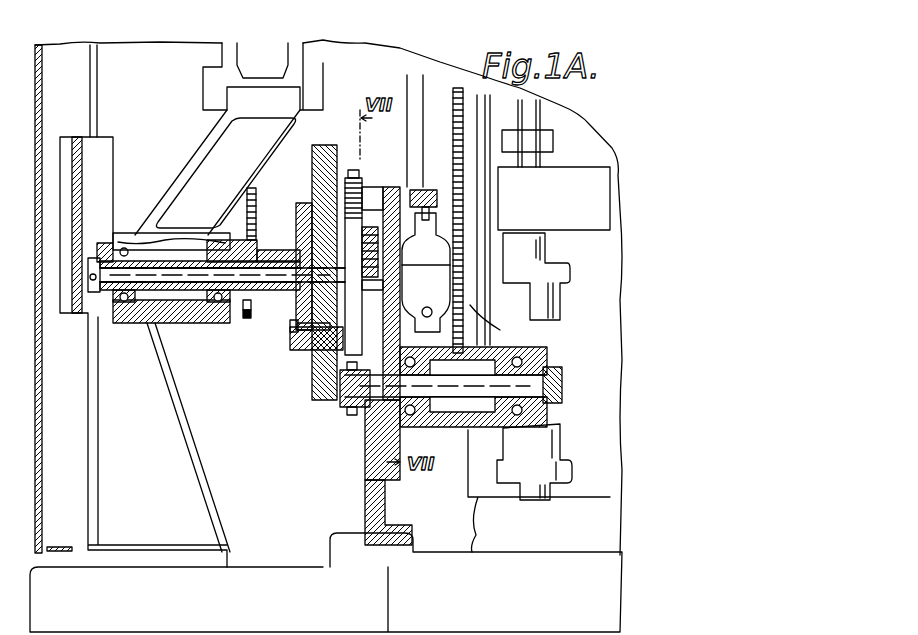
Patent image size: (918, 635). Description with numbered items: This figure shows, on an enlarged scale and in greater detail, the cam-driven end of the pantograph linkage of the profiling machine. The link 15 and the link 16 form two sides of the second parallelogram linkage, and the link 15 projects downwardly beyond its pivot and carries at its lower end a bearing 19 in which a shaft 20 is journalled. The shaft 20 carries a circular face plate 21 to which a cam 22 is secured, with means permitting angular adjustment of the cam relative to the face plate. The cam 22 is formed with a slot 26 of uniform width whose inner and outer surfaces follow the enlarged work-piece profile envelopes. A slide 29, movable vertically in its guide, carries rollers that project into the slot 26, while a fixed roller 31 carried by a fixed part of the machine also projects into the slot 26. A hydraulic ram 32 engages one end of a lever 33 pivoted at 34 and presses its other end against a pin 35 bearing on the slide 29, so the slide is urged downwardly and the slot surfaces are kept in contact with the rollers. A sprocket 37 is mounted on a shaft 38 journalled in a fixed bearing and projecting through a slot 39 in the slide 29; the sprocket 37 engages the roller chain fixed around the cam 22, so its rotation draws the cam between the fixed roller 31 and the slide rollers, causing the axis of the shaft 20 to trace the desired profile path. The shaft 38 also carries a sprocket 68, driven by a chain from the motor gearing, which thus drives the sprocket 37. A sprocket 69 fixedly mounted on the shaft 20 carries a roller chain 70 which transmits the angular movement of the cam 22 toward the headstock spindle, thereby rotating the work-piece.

The link 15 is at (203, 175).
The link 16 is at (212, 98).
The bearing 19 is at (182, 325).
The shaft 20 is at (157, 285).
The circular face plate 21 is at (322, 145).
The cam 22 is at (355, 180).
The slot 26 is at (370, 194).
The slide 29 is at (375, 462).
The fixed roller 31 is at (300, 348).
The hydraulic ram 32 is at (490, 240).
The lever 33 is at (411, 193).
The pivot 34 is at (405, 195).
The pin 35 is at (305, 222).
The sprocket 37 is at (340, 400).
The shaft 38 is at (432, 412).
The slot 39 is at (365, 423).
The sprocket 68 is at (462, 430).
The sprocket 69 is at (246, 318).
The roller chain 70 is at (258, 200).